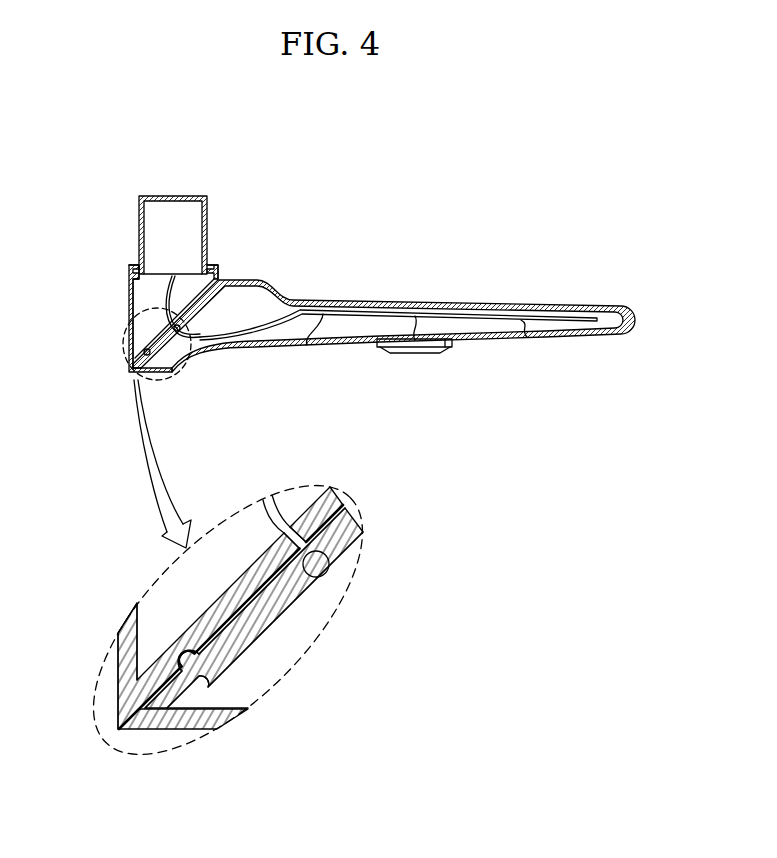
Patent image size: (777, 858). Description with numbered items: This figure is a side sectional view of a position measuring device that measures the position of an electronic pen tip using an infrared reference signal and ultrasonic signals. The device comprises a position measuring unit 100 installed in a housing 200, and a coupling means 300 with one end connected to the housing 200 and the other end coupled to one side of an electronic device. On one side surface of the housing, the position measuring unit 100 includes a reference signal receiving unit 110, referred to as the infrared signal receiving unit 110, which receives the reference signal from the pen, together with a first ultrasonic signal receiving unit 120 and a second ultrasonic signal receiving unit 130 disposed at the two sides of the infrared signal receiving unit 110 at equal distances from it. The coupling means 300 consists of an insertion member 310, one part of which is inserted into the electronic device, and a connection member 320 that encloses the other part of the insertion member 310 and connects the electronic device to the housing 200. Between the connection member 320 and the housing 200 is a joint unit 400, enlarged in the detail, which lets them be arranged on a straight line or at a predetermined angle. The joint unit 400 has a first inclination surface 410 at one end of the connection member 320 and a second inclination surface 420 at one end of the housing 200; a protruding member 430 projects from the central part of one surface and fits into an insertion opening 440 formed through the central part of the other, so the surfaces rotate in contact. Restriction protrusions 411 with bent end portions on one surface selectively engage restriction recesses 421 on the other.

The position measuring unit 100 is at (398, 374).
The reference signal receiving unit 110 is at (417, 346).
The first ultrasonic signal receiving unit 120 is at (308, 350).
The second ultrasonic signal receiving unit 130 is at (527, 365).
The housing 200 is at (277, 295).
The coupling means 300 is at (124, 462).
The insertion member 310 is at (137, 233).
The connection member 320 is at (135, 497).
The joint unit 400 is at (253, 617).
The first inclination surface 410 is at (265, 594).
The restriction protrusions 411 is at (212, 672).
The second inclination surface 420 is at (206, 666).
The restriction recesses 421 is at (181, 662).
The protruding member 430 is at (330, 561).
The insertion opening 440 is at (357, 536).